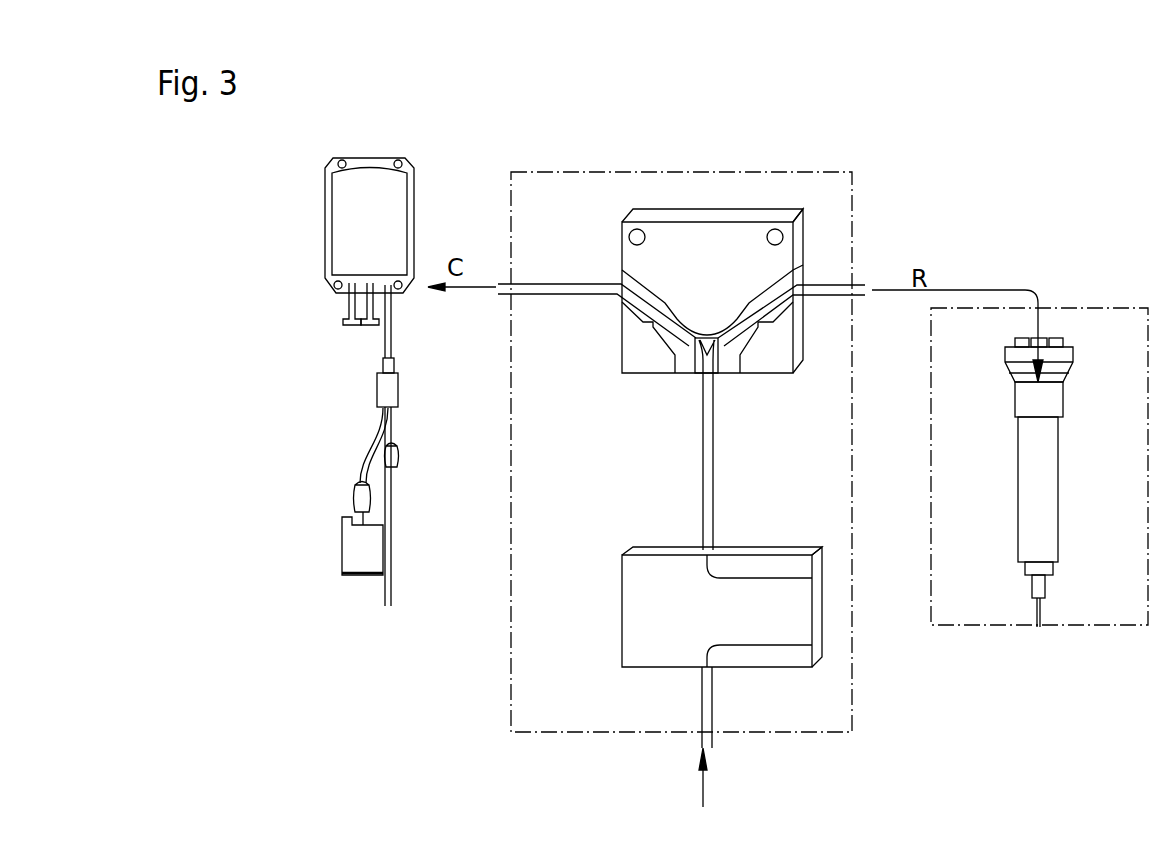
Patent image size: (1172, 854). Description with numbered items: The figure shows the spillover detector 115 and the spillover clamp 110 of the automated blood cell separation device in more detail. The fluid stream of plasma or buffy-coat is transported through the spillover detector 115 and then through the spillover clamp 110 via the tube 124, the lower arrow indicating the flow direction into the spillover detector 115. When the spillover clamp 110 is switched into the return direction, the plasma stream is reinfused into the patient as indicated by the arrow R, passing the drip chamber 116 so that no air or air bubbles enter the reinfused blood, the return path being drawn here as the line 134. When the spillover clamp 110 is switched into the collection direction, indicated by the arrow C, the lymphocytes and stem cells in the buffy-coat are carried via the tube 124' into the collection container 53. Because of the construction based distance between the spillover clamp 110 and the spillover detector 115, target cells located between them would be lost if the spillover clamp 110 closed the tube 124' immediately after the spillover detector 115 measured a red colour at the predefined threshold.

The collection container 53 is at (365, 185).
The spillover clamp 110 is at (698, 237).
The spillover detector 115 is at (678, 632).
The drip chamber 116 is at (1048, 535).
The tube 124 is at (660, 590).
The tube 124' is at (519, 409).
The reagent tube line 134 is at (846, 280).